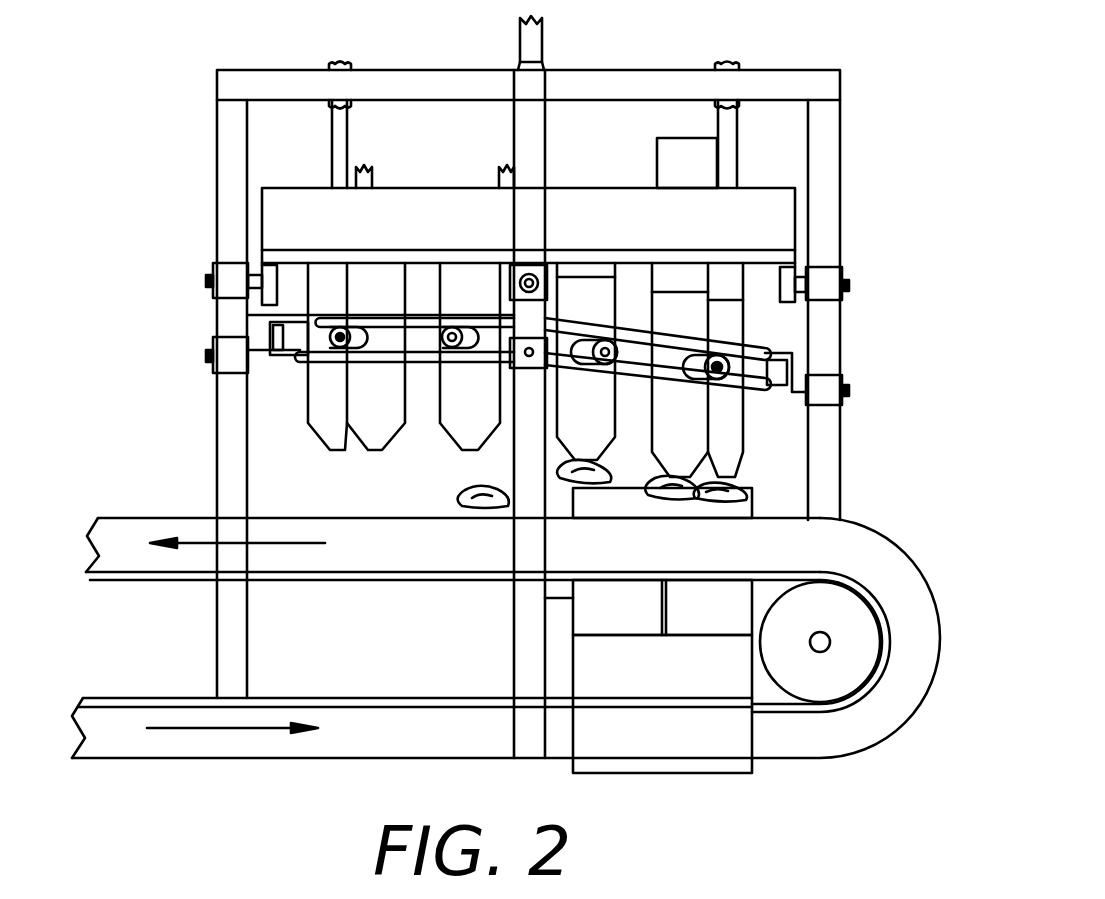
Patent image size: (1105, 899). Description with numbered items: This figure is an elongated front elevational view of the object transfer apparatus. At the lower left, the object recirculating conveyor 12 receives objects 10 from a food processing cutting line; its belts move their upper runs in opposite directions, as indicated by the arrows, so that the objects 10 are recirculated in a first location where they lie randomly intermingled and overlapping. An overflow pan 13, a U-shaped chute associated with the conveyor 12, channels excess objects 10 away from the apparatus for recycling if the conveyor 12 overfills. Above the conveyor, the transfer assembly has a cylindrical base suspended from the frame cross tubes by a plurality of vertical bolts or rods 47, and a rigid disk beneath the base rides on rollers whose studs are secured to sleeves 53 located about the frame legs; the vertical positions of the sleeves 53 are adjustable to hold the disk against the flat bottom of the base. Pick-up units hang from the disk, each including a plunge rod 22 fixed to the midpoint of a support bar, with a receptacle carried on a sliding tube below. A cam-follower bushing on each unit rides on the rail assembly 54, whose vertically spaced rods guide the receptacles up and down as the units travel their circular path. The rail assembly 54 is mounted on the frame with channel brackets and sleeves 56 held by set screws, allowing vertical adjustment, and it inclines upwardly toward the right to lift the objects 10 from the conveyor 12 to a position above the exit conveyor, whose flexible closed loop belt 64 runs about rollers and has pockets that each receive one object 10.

The objects 10 is at (745, 492).
The object recirculating conveyor 12 is at (712, 622).
The overflow pan 13 is at (648, 733).
The plunge rod 22 is at (335, 449).
The vertical bolts or rods 47 is at (343, 142).
The sleeves 53 is at (822, 283).
The rail assembly 54 is at (293, 350).
The sleeves 56 is at (828, 385).
The belt 64 is at (912, 632).